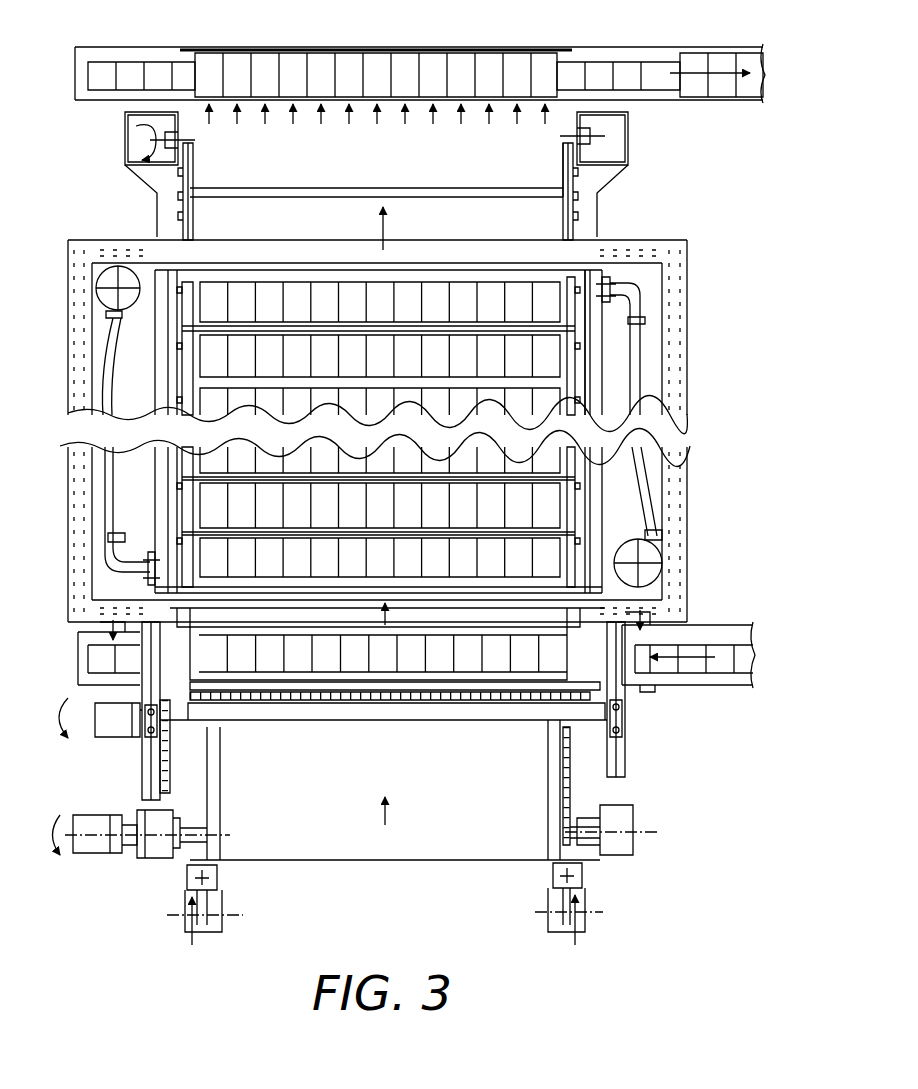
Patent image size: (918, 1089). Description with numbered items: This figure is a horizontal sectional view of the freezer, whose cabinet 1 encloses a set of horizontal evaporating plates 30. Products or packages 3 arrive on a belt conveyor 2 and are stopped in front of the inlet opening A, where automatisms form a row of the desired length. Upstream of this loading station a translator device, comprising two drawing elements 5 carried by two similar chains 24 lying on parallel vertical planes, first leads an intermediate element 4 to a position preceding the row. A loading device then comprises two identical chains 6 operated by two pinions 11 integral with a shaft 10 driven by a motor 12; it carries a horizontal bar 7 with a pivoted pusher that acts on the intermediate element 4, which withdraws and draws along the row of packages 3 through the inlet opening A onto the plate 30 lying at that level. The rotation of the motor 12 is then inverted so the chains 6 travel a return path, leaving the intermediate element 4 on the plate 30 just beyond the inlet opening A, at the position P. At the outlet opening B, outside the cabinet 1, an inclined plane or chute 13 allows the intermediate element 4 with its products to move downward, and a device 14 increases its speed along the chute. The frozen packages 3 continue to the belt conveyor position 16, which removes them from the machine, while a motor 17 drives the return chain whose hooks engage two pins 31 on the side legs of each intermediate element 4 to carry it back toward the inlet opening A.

The cabinet 1 is at (677, 298).
The belt conveyor 2 is at (700, 628).
The products or packages 3 is at (323, 75).
The intermediate element 4 is at (362, 195).
The drawing elements 5 is at (210, 880).
The chains 6 is at (167, 783).
The horizontal bar 7 is at (513, 697).
The shaft 10 is at (352, 722).
The pinions 11 is at (147, 740).
The motor 12 is at (100, 712).
The chute (inclined plane) 13 is at (218, 225).
The speed-increasing device 14 is at (185, 213).
The belt conveyor position 16 is at (594, 45).
The motor 17 is at (95, 842).
The chains 24 is at (203, 828).
The horizontal evaporating plates 30 is at (445, 275).
The pins 31 is at (183, 290).
The inlet opening A is at (518, 608).
The outlet opening B is at (405, 255).
The position of intermediate element P is at (580, 555).